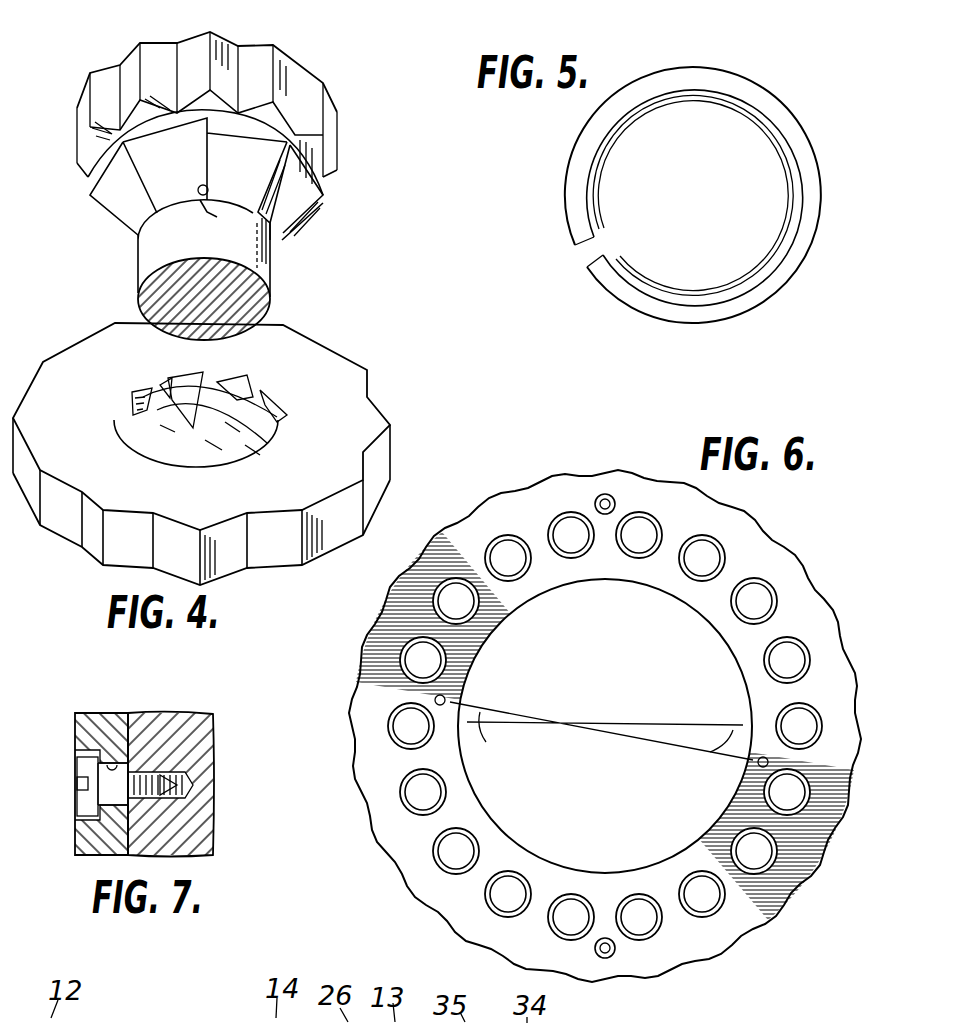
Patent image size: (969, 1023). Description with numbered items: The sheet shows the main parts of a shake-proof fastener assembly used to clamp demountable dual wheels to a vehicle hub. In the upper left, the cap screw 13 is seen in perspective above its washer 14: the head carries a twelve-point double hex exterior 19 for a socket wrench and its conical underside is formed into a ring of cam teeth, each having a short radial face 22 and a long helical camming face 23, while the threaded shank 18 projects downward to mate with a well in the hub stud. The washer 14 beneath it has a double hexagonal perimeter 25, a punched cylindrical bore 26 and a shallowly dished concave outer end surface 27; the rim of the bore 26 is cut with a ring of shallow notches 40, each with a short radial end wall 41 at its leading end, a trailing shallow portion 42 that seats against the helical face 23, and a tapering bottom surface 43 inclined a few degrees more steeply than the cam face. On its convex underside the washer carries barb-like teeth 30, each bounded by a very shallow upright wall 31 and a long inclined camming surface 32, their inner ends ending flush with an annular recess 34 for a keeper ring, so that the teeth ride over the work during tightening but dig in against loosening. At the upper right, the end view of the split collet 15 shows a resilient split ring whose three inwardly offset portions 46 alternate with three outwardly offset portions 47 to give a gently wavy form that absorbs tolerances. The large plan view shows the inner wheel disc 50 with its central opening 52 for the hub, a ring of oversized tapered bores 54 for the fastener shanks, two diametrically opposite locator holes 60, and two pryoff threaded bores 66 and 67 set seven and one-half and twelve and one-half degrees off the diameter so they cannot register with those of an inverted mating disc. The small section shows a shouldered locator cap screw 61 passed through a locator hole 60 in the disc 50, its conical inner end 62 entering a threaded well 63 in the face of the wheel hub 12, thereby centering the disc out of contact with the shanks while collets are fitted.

In FIG. 7, the wheel hub 12 is at (175, 710).
In FIG. 4, the cap screw 13 is at (317, 53).
In FIG. 4, the washer 14 is at (337, 335).
In FIG. 5, the split collet 15 is at (793, 50).
In FIG. 4, the shank of cap screw 18 is at (143, 270).
In FIG. 4, the 12 point double hex exterior 19 is at (83, 112).
In FIG. 4, the radial face 22 is at (188, 183).
In FIG. 4, the helical camming face 23 is at (293, 202).
In FIG. 4, the double hexagonal perimeter 25 is at (377, 452).
In FIG. 4, the central bore 26 is at (140, 450).
In FIG. 4, the concave outer end surface 27 is at (75, 403).
In FIG. 4, the barb-like teeth 30 is at (232, 428).
In FIG. 4, the upright wall 31 is at (213, 447).
In FIG. 4, the inclined camming surface 32 is at (253, 453).
In FIG. 4, the annular recess 34 is at (167, 430).
In FIG. 4, the notches 40 is at (260, 373).
In FIG. 4, the radial end wall 41 is at (167, 378).
In FIG. 4, the trailing shallow portion 42 is at (215, 410).
In FIG. 4, the tapering bottom surface 43 is at (287, 415).
In FIG. 5, the inwardly offset portions 46 is at (578, 125).
In FIG. 5, the outwardly offset portions 47 is at (693, 67).
In FIG. 6, the inner wheel disc 50 is at (780, 570).
In FIG. 7, the inner wheel disc 50 is at (83, 827).
In FIG. 6, the central opening 52 is at (700, 617).
In FIG. 6, the oversized tapered bores 54 is at (432, 848).
In FIG. 6, the locator holes 60 is at (607, 500).
In FIG. 7, the locator holes 60 is at (115, 767).
In FIG. 7, the locator cap screw 61 is at (107, 777).
In FIG. 7, the conical inner end 62 is at (212, 738).
In FIG. 7, the threaded well 63 is at (187, 797).
In FIG. 6, the threaded bore 66 is at (443, 697).
In FIG. 6, the threaded bore 67 is at (768, 760).